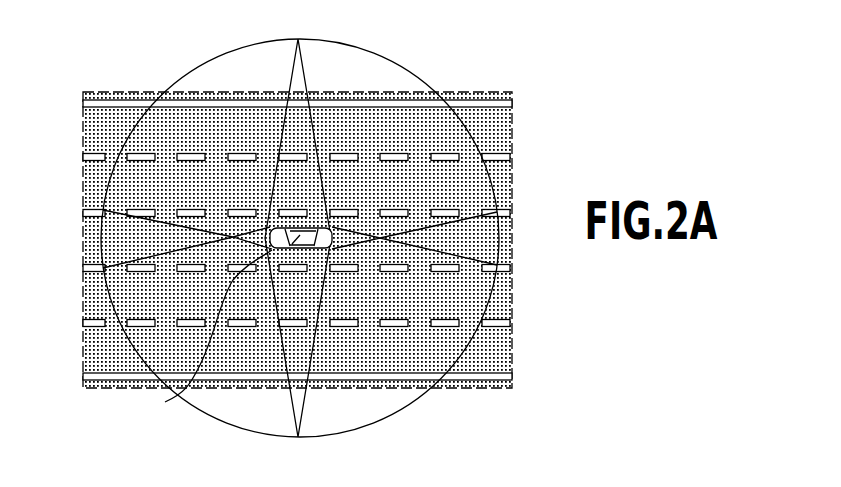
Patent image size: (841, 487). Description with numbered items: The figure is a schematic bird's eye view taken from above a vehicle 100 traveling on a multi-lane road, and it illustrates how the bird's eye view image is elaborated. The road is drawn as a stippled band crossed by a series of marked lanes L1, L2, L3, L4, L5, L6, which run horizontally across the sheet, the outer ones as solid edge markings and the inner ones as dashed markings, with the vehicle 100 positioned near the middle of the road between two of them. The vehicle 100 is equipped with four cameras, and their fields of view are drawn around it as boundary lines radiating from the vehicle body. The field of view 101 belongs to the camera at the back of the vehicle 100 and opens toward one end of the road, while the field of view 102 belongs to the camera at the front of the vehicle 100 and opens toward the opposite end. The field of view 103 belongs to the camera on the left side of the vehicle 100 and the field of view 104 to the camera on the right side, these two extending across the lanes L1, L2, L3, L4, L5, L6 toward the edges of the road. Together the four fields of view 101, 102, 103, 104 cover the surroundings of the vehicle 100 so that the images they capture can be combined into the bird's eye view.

The vehicle 100 is at (165, 402).
The field of view of rear camera 101 is at (83, 232).
The field of view of front camera 102 is at (497, 233).
The field of view of left-side camera 103 is at (298, 39).
The field of view of right-side camera 104 is at (298, 437).
The lane L1 is at (512, 105).
The lane L2 is at (512, 157).
The lane L3 is at (512, 213).
The lane L4 is at (512, 268).
The lane L5 is at (512, 323).
The lane L6 is at (512, 375).